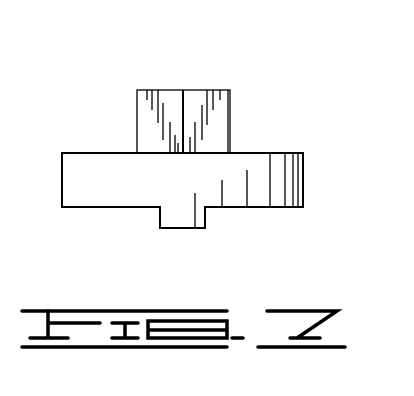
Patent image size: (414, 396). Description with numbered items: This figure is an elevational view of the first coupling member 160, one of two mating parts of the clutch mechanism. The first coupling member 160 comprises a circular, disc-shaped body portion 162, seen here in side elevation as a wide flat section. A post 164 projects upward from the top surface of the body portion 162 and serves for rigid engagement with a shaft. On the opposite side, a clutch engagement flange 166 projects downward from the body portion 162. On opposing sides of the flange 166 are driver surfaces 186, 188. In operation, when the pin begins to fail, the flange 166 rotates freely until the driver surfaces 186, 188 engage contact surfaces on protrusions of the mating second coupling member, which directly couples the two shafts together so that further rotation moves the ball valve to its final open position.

The first coupling member 160 is at (148, 78).
The body portion 162 is at (257, 172).
The post 164 is at (218, 113).
The clutch engagement flange 166 is at (187, 226).
The driver surface 186 is at (160, 222).
The driver surface 188 is at (205, 220).